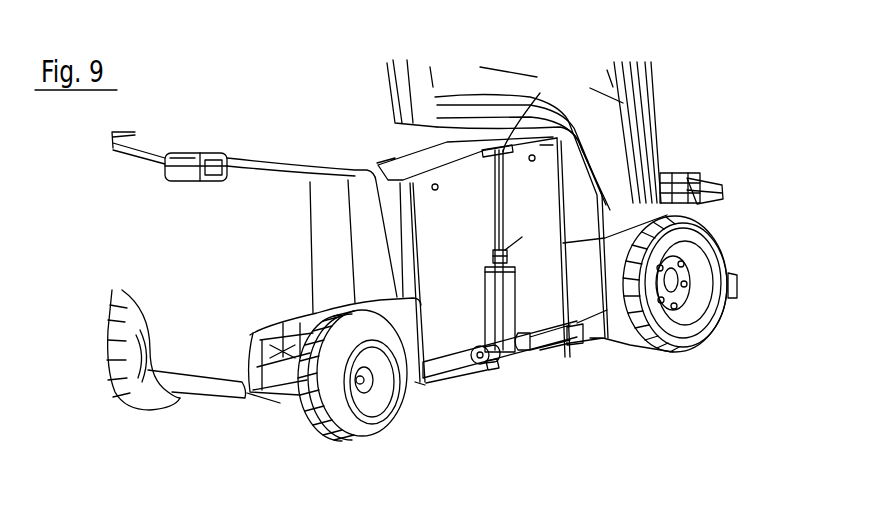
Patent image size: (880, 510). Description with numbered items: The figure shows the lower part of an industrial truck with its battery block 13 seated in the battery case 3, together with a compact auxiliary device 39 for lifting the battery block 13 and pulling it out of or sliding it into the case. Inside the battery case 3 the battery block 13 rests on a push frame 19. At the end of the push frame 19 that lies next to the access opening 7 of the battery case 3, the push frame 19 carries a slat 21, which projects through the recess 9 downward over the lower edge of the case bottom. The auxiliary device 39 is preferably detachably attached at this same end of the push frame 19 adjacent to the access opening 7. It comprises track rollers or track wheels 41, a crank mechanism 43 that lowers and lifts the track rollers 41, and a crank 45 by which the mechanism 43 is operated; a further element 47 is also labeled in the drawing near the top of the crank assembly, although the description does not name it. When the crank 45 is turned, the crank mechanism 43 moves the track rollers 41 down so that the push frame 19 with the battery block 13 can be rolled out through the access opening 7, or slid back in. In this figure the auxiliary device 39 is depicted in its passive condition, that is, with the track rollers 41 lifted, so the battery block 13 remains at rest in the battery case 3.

The battery case 3 is at (567, 207).
The access opening 7 is at (540, 196).
The recess 9 is at (533, 353).
The battery block 13 is at (443, 325).
The push frame 19 is at (578, 325).
The slat 21 is at (472, 356).
The auxiliary device 39 is at (522, 280).
The track rollers 41 is at (493, 367).
The crank mechanism 43 is at (485, 292).
The crank 45 is at (496, 193).
The hydraulic line 47 is at (540, 93).